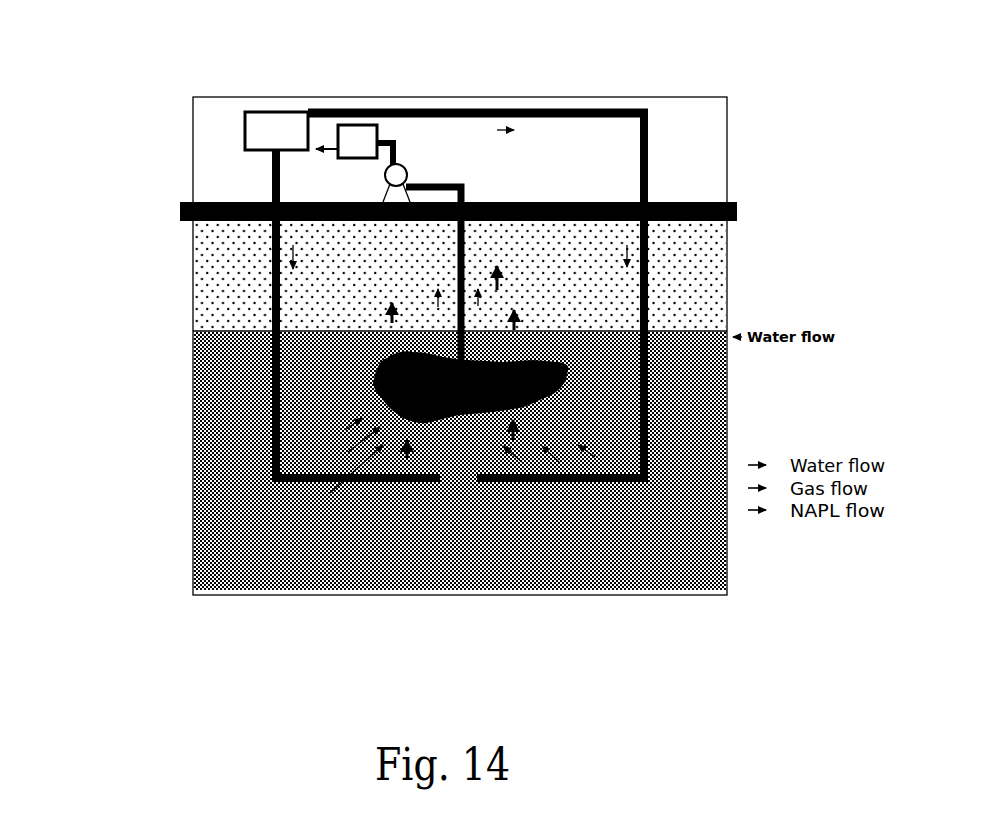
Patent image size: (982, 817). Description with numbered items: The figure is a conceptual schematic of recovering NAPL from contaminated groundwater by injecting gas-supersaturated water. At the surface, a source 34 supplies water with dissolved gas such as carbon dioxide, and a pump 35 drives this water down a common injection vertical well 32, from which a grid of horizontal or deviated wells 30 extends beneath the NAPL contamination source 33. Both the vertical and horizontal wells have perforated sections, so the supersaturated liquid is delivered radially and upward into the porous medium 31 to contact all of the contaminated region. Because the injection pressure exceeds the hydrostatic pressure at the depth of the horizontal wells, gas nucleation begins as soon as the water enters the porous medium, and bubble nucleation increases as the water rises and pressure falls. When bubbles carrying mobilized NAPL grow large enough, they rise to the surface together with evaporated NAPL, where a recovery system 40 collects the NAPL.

The horizontal or deviated wells 30 is at (330, 493).
The porous medium 31 is at (233, 450).
The injection vertical well 32 is at (273, 305).
The NAPL contamination source 33 is at (568, 375).
The source 34 is at (265, 128).
The pump 35 is at (386, 176).
The recovery system 40 is at (353, 140).